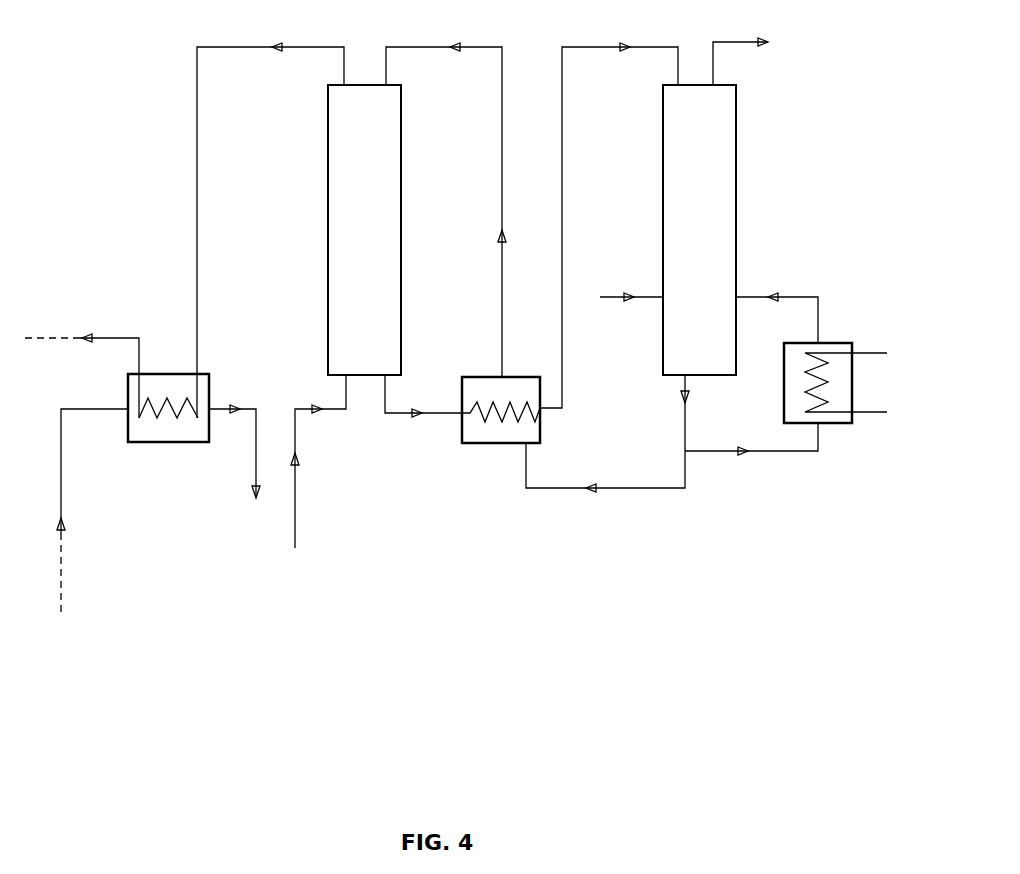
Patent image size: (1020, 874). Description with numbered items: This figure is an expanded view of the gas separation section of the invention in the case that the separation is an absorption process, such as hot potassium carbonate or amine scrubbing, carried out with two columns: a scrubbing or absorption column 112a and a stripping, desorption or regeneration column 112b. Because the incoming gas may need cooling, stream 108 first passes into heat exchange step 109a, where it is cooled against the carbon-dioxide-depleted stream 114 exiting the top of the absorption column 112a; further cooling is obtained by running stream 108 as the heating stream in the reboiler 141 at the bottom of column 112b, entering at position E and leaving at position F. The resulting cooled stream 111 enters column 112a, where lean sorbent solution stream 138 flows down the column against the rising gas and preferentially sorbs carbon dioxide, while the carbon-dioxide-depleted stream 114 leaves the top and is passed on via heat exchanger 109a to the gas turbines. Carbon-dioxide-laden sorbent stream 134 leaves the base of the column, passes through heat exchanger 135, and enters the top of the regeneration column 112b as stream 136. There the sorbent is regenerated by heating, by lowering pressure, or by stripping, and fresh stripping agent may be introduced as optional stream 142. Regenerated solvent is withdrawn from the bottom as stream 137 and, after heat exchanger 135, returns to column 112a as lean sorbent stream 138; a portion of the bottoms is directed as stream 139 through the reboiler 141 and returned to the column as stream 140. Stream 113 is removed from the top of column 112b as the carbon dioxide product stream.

The stream 108 is at (165, 508).
The heat exchange step 109a is at (153, 442).
The cooled stream 111 is at (306, 474).
The scrubbing column 112a is at (328, 175).
The regeneration column 112b is at (736, 171).
The carbon dioxide product stream 113 is at (759, 59).
The carbon-dioxide-depleted stream 114 is at (183, 219).
The carbon-dioxide-laden sorbent stream 134 is at (423, 407).
The heat exchanger 135 is at (485, 443).
The stream 136 is at (609, 214).
The regenerated solvent stream 137 is at (607, 445).
The lean sorbent solution stream 138 is at (446, 199).
The stream 139 is at (751, 450).
The stream 140 is at (777, 306).
The reboiler 141 is at (845, 423).
The optional stream 142 is at (631, 309).